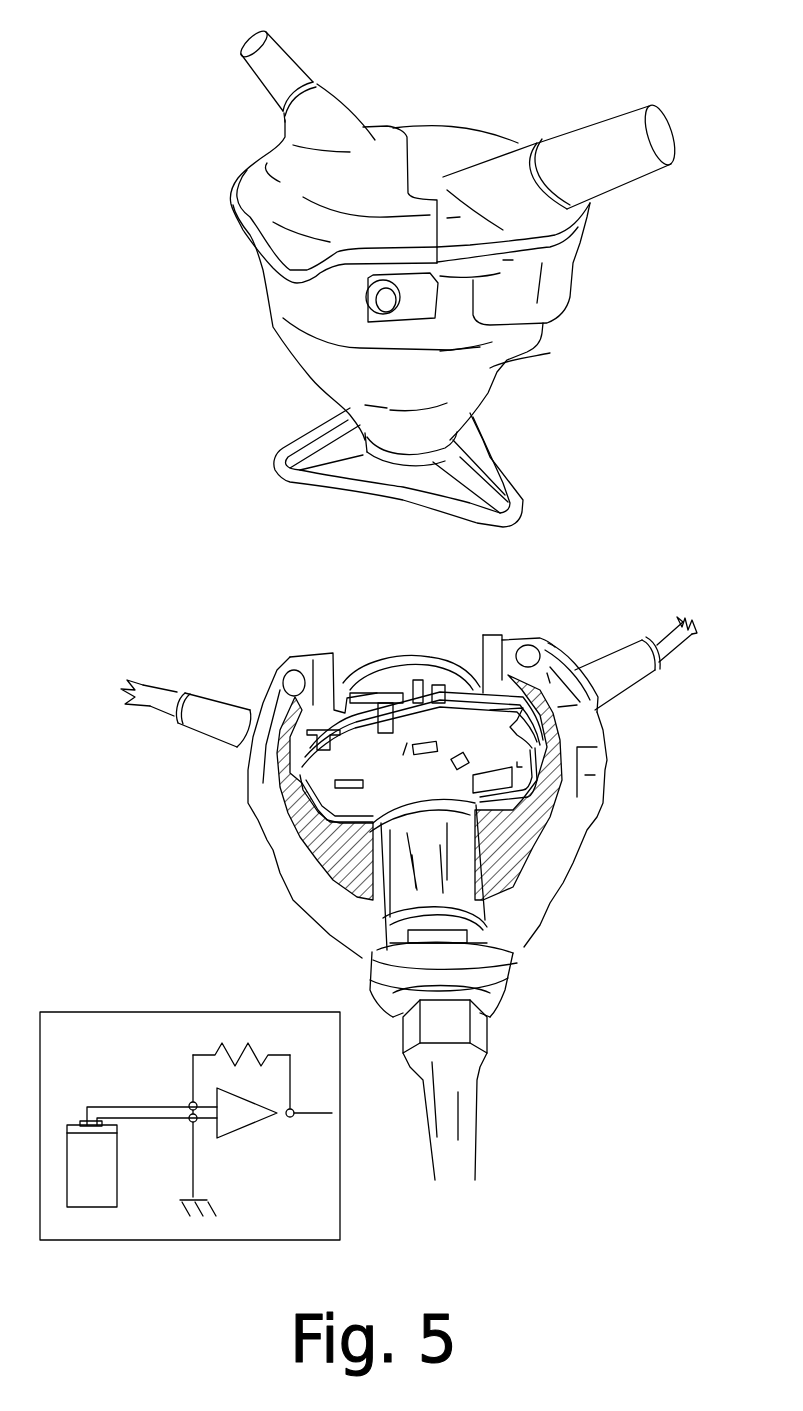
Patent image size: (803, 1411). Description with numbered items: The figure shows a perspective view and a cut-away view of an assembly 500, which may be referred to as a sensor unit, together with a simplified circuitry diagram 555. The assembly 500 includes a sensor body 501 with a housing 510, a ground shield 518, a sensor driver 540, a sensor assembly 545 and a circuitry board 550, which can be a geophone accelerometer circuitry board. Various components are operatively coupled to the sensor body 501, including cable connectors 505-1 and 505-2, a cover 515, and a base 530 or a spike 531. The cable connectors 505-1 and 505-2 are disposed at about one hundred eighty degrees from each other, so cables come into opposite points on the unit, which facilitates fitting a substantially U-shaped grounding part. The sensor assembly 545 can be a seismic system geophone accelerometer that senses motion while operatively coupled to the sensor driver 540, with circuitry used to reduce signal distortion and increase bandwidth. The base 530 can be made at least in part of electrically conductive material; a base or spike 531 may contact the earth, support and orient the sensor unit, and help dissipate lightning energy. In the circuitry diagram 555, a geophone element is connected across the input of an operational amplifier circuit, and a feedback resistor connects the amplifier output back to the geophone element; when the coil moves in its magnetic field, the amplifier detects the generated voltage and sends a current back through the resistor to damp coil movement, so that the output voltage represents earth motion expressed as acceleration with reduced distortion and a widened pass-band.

The assembly 500 is at (628, 32).
The sensor body 501 is at (603, 348).
The cable connector 505-1 is at (633, 167).
The cable connector 505-2 is at (270, 72).
The housing 510 is at (307, 343).
The cover 515 is at (440, 145).
The ground shield 518 is at (315, 845).
The base 530 is at (480, 440).
The spike 531 is at (450, 1077).
The sensor driver 540 is at (453, 933).
The sensor assembly 545 is at (393, 897).
The circuitry board 550 is at (432, 784).
The circuitry diagram 555 is at (142, 1084).